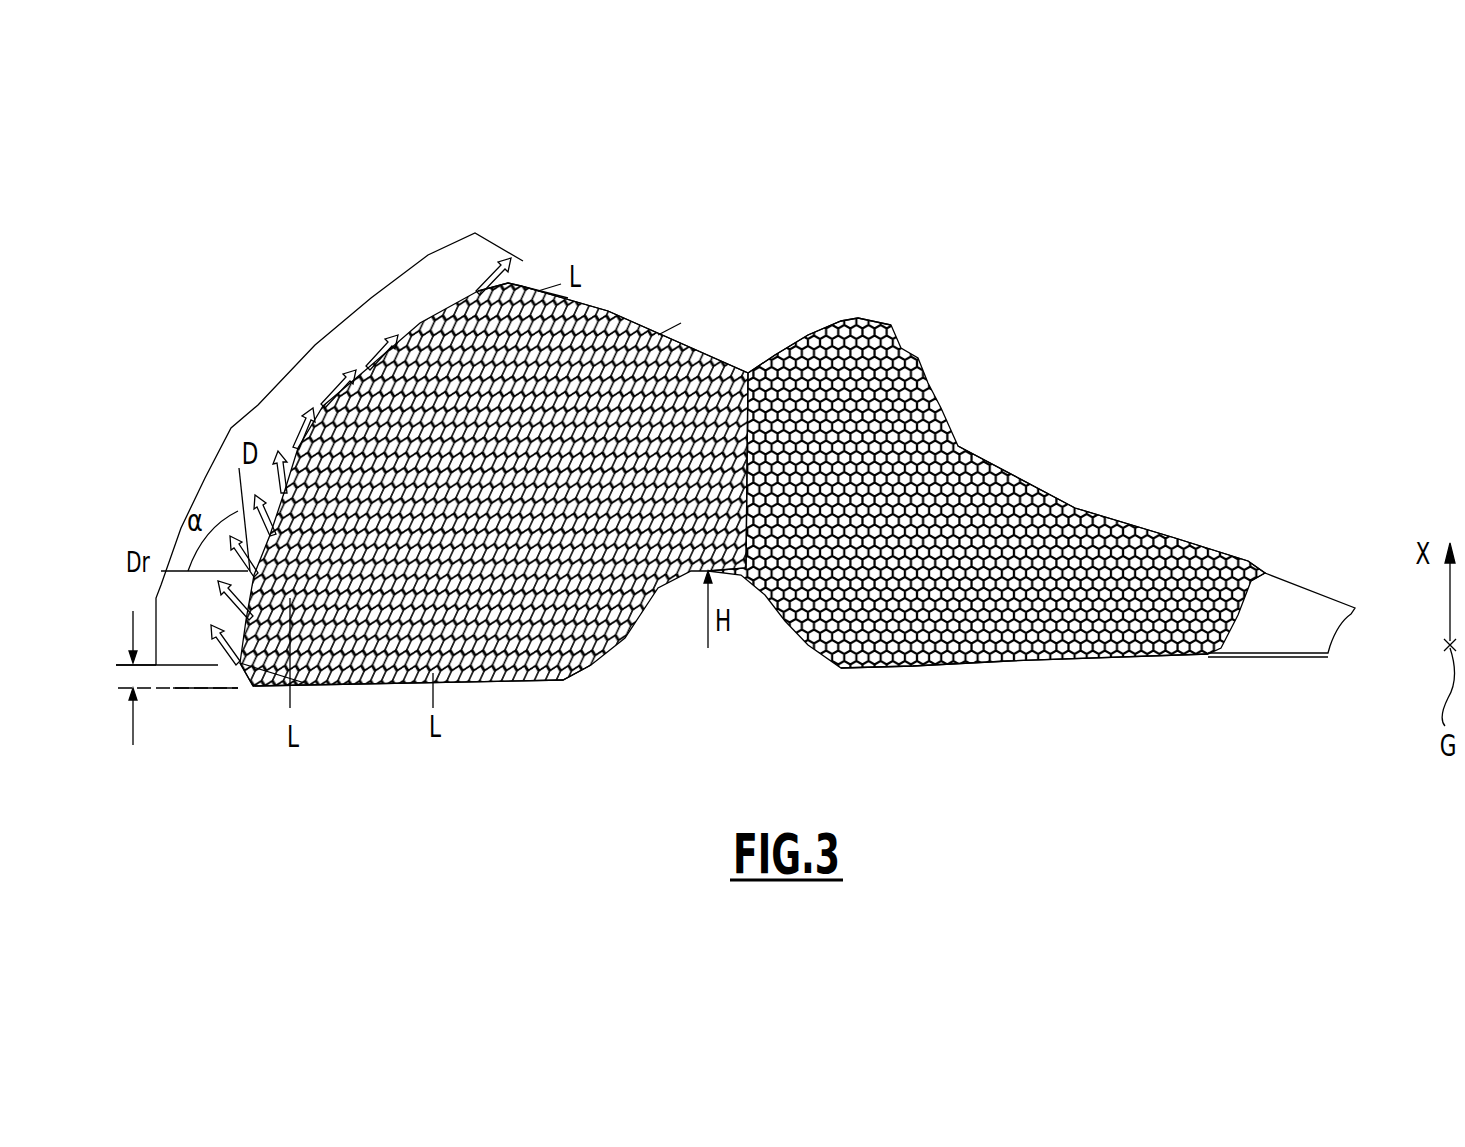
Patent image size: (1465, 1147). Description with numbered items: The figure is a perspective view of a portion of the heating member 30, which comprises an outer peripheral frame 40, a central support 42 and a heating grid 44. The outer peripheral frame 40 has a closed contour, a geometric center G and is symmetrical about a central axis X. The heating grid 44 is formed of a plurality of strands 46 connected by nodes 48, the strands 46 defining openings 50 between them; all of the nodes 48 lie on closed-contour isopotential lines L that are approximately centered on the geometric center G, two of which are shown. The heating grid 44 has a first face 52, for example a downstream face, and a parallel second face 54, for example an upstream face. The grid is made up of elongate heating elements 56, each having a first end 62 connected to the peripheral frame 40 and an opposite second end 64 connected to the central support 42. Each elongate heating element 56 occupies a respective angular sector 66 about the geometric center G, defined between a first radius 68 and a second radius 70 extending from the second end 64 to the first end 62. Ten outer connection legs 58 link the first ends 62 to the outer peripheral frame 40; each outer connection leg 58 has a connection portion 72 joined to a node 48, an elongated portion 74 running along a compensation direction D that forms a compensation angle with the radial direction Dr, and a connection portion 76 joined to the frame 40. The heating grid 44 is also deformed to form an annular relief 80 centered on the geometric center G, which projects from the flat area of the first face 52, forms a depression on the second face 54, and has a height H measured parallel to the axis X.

The heating member 30 is at (768, 288).
The outer peripheral frame 40 is at (447, 262).
The central support 42 is at (1276, 626).
The heating grid 44 is at (683, 330).
The strands 46 is at (545, 270).
The nodes 48 is at (502, 253).
The openings 50 is at (473, 677).
The first face 52 is at (988, 440).
The second face 54 is at (910, 684).
The elongate heating elements 56 is at (425, 333).
The outer connection legs 58 is at (310, 420).
The first end 62 is at (340, 388).
The second end 64 is at (1247, 560).
The angular sector 66 is at (163, 675).
The first radius 68 is at (107, 650).
The second radius 70 is at (180, 700).
The connection portion 72 is at (240, 578).
The elongated portion 74 is at (230, 557).
The connection portion 76 is at (232, 500).
The relief 80 is at (848, 312).